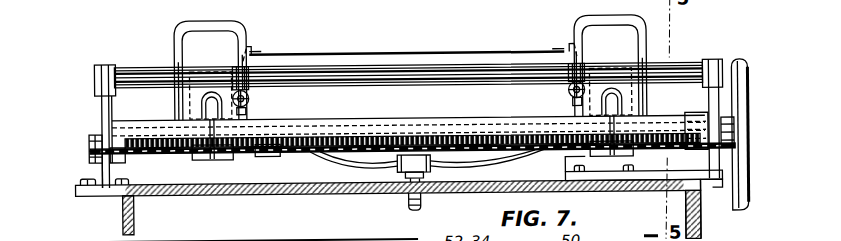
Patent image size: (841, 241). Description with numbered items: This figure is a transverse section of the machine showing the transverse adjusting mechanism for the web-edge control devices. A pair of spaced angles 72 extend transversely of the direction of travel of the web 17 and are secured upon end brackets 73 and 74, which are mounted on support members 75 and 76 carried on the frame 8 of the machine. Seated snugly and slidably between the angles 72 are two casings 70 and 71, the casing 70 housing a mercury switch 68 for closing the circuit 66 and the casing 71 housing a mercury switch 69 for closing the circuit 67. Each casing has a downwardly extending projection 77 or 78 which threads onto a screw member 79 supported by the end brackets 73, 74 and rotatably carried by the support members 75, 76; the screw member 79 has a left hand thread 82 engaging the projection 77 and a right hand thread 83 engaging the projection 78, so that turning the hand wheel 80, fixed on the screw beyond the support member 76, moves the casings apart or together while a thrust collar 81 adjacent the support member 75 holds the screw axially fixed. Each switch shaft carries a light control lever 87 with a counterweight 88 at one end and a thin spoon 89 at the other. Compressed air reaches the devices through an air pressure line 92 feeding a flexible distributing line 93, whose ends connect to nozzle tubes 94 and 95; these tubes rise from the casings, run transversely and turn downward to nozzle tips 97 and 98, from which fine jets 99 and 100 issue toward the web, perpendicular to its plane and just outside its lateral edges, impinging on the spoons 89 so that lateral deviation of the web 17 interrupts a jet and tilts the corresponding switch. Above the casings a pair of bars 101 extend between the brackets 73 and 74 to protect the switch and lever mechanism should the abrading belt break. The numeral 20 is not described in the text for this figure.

The frame 8 is at (438, 193).
The web 17 is at (368, 53).
The table 20 is at (367, 238).
The circuit 66 is at (212, 155).
The circuit 67 is at (610, 155).
The mercury switch 68 is at (222, 82).
The mercury switch 69 is at (616, 83).
The casing 70 is at (185, 99).
The casing 71 is at (634, 92).
The angles 72 is at (380, 117).
The end bracket 73 is at (102, 105).
The end bracket 74 is at (712, 95).
The support member 75 is at (100, 170).
The support member 76 is at (708, 195).
The downwardly extending projection 77 is at (238, 157).
The downwardly extending projection 78 is at (665, 148).
The screw member 79 is at (480, 158).
The hand wheel 80 is at (750, 183).
The thrust collar 81 is at (89, 137).
The left hand thread 82 is at (173, 160).
The right hand thread 83 is at (573, 150).
The control lever 87 is at (250, 97).
The counterweight 88 is at (258, 109).
The spoon 89 is at (275, 53).
The air pressure line 92 is at (417, 211).
The distributing line 93 is at (345, 158).
The nozzle tube 94 is at (204, 21).
The nozzle tube 95 is at (602, 17).
The nozzle tip 97 is at (248, 47).
The nozzle tip 98 is at (573, 43).
The jet of air 99 is at (243, 62).
The jet of air 100 is at (578, 58).
The bars 101 is at (126, 68).